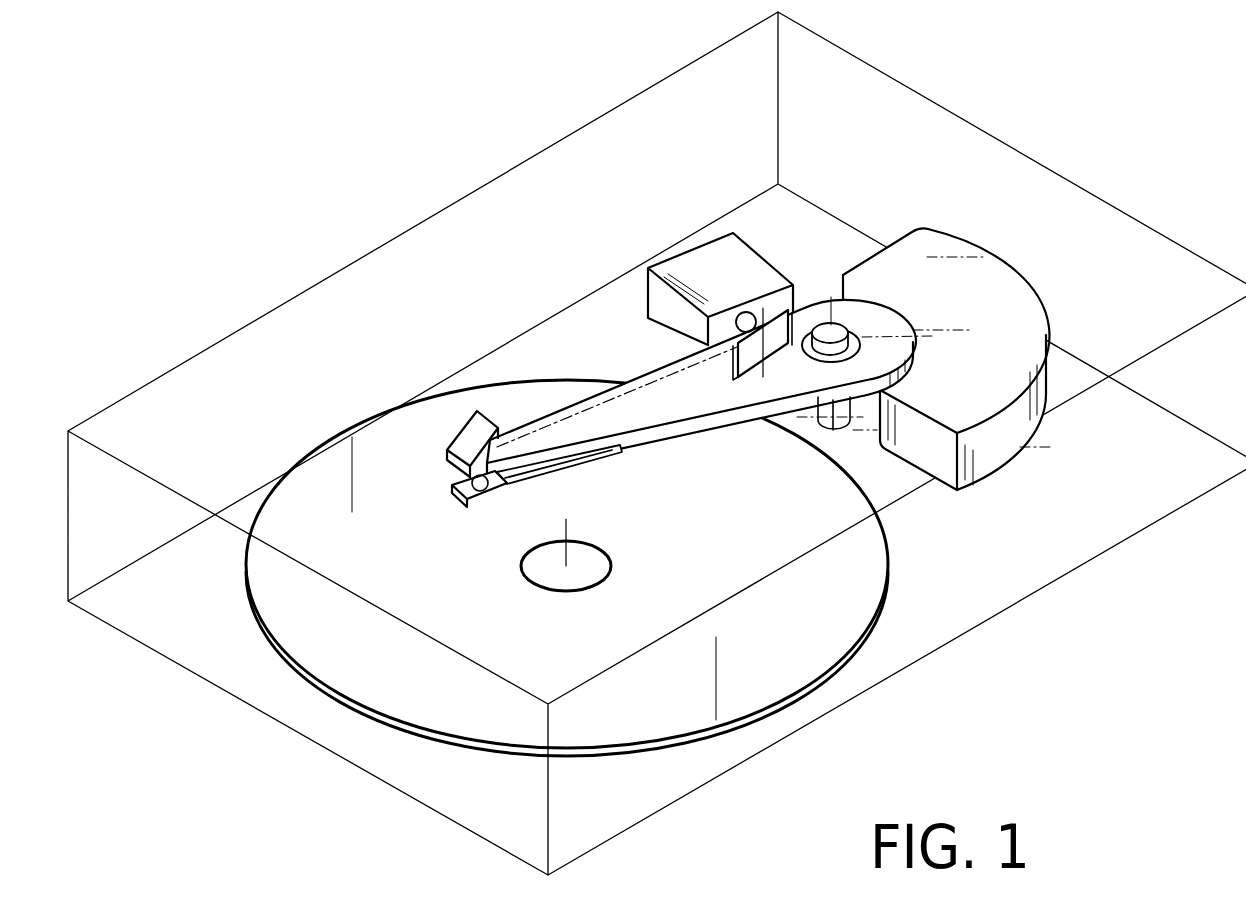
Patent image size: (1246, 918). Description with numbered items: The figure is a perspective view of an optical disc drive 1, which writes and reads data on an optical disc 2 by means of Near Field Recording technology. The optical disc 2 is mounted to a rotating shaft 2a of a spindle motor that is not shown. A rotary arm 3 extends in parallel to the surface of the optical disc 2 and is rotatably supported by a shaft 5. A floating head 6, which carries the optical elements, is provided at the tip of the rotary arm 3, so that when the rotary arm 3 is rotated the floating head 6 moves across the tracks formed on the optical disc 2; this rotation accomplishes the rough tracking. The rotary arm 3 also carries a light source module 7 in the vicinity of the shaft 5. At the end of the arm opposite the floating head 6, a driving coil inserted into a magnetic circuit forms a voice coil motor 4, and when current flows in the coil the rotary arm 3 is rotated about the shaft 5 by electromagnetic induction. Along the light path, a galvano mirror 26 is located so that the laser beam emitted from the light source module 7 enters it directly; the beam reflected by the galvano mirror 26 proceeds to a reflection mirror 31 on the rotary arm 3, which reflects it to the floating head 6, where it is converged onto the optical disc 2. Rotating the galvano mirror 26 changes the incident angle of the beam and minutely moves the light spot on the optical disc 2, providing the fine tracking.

The optical disc drive 1 is at (386, 221).
The optical disc 2 is at (860, 593).
The rotating shaft 2a is at (612, 563).
The rotary arm 3 is at (640, 368).
The voice coil motor 4 is at (1000, 290).
The shaft 5 is at (827, 330).
The floating head 6 is at (452, 487).
The light source module 7 is at (692, 265).
The galvano mirror 26 is at (757, 360).
The reflection mirror 31 is at (473, 428).